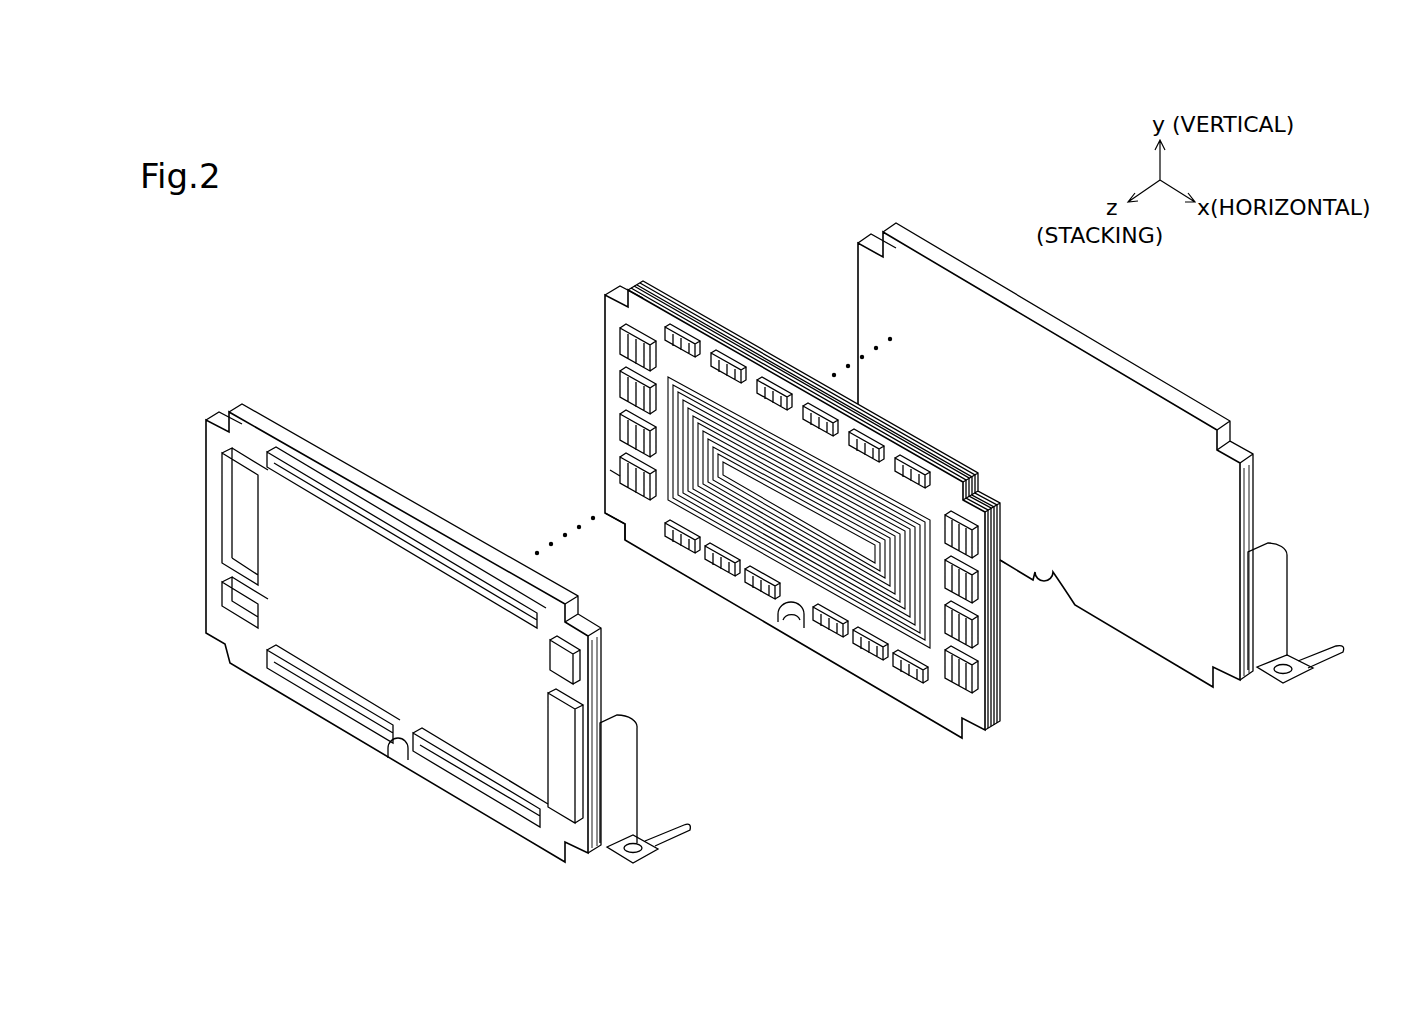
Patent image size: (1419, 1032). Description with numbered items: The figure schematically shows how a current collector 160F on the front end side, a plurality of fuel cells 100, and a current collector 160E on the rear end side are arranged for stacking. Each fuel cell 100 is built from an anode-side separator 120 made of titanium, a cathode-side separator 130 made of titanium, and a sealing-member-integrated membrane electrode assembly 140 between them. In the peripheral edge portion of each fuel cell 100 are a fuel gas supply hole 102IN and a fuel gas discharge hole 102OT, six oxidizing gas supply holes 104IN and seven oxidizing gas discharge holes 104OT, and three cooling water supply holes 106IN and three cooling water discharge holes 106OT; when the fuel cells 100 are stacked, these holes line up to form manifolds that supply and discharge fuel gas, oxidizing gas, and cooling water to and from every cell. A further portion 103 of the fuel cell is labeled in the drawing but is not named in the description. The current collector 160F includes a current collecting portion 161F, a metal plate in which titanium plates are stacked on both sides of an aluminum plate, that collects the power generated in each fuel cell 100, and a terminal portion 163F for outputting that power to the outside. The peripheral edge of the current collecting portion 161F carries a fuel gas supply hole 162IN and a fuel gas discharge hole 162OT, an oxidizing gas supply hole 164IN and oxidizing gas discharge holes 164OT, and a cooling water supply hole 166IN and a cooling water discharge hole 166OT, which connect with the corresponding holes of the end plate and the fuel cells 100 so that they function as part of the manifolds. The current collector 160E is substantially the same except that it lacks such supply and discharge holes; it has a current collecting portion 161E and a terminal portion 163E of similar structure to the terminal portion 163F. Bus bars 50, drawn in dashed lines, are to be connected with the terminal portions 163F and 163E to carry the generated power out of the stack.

The fuel cell 100 is at (780, 451).
The anode-side separator 120 is at (605, 300).
The cathode-side separator 130 is at (628, 288).
The sealing-member-integrated membrane electrode assembly 140 is at (628, 285).
The plate body 103 is at (625, 505).
The fuel gas discharge hole 102OT is at (612, 471).
The fuel gas supply hole 102IN is at (1002, 588).
The oxidizing gas discharge holes 104OT is at (906, 461).
The oxidizing gas supply holes 104IN is at (900, 680).
The cooling water discharge holes 106OT is at (620, 466).
The cooling water supply holes 106IN is at (972, 695).
The current collector 160F is at (465, 563).
The current collector 160E is at (1098, 412).
The current collecting portion 161F is at (220, 410).
The current collecting portion 161E is at (905, 287).
The fuel gas discharge hole 162OT is at (235, 625).
The fuel gas supply hole 162IN is at (572, 678).
The oxidizing gas discharge holes 164OT is at (349, 507).
The oxidizing gas supply hole 164IN is at (473, 786).
The cooling water discharge hole 166OT is at (250, 462).
The cooling water supply hole 166IN is at (570, 733).
The terminal portion 163F is at (623, 780).
The terminal portion 163E is at (1272, 610).
The bus bar 50 is at (673, 843).